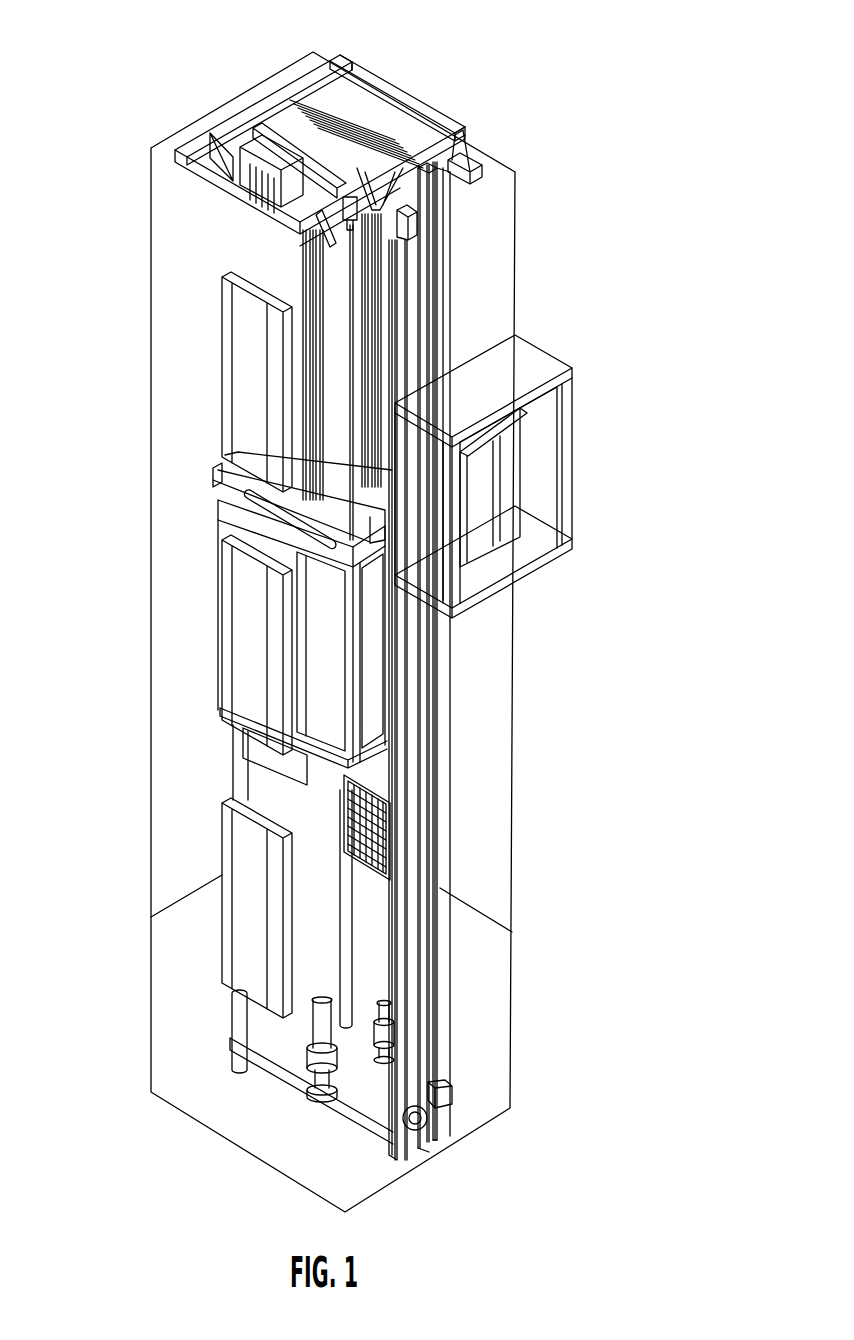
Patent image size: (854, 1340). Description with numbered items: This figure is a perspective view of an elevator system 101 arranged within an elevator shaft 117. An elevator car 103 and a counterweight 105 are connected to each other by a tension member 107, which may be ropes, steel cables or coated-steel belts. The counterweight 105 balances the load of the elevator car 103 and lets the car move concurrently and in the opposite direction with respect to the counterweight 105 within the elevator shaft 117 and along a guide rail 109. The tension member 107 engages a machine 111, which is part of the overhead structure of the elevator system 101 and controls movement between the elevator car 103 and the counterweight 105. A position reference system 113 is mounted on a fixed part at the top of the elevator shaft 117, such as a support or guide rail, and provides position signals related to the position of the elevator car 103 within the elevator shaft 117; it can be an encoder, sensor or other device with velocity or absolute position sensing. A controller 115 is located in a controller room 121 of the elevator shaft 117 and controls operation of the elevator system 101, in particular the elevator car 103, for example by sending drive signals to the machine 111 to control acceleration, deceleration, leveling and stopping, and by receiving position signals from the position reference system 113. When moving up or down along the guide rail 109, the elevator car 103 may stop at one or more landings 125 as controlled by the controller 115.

The elevator system 101 is at (527, 108).
The elevator car 103 is at (337, 680).
The counterweight 105 is at (392, 849).
The tension member 107 is at (336, 381).
The guide rail 109 is at (413, 772).
The machine 111 is at (250, 141).
The position reference system 113 is at (405, 231).
The controller 115 is at (515, 487).
The elevator shaft 117 is at (194, 769).
The controller room 121 is at (576, 369).
The landings 125 is at (220, 367).